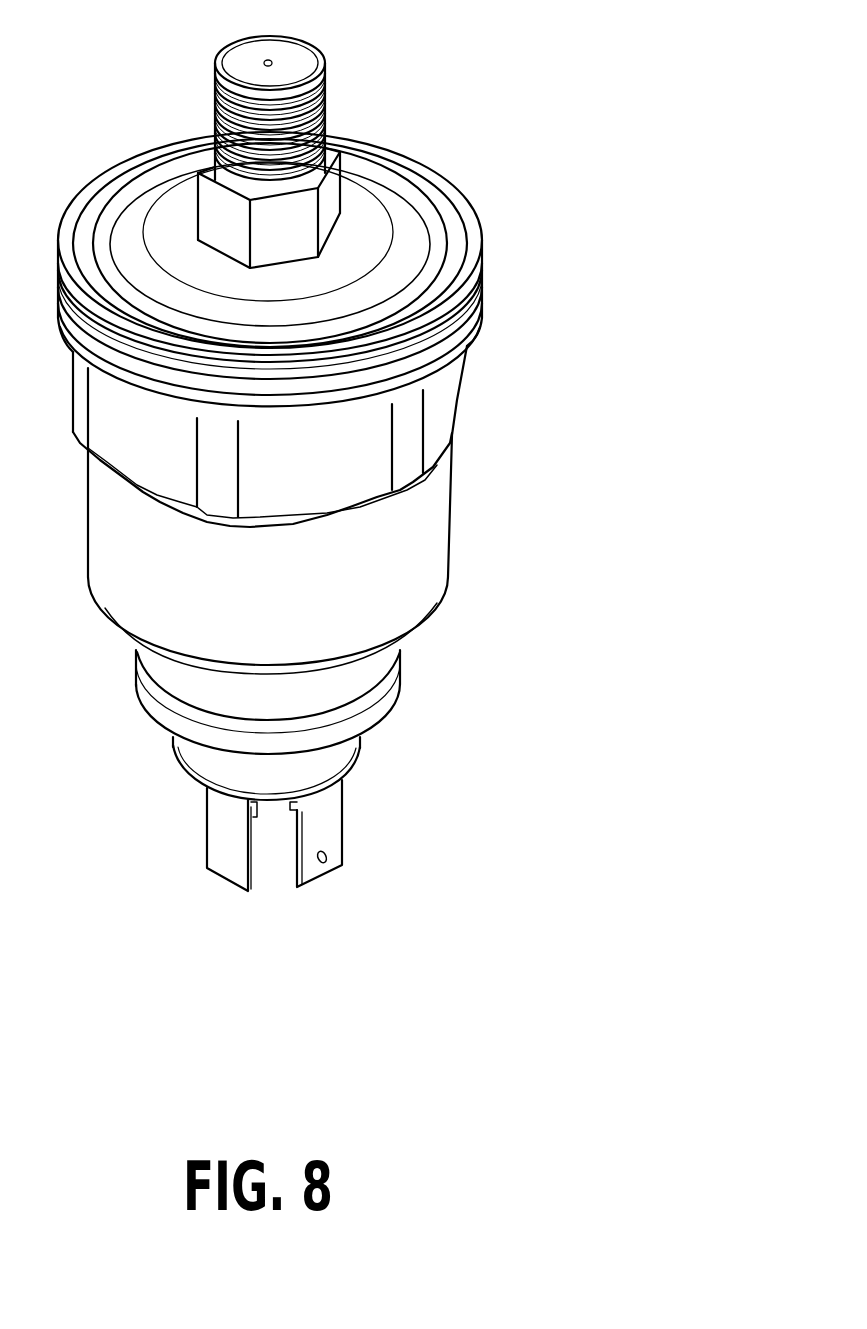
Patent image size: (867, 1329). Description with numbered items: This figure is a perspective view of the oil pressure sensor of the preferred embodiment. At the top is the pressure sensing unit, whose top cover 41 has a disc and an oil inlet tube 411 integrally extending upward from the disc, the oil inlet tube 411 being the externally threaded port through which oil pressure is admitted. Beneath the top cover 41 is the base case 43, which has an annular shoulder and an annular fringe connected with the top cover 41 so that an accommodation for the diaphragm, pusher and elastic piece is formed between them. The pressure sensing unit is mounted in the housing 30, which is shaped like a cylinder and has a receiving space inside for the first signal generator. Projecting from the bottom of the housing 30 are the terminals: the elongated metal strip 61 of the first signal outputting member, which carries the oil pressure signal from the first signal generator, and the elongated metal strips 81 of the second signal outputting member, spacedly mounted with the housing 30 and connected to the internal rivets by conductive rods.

The oil inlet tube 411 is at (292, 60).
The top cover 41 is at (410, 240).
The base case 43 is at (460, 305).
The housing 30 is at (442, 402).
The elongated metal strip 61 is at (225, 833).
The elongated metal strips 81 is at (318, 826).